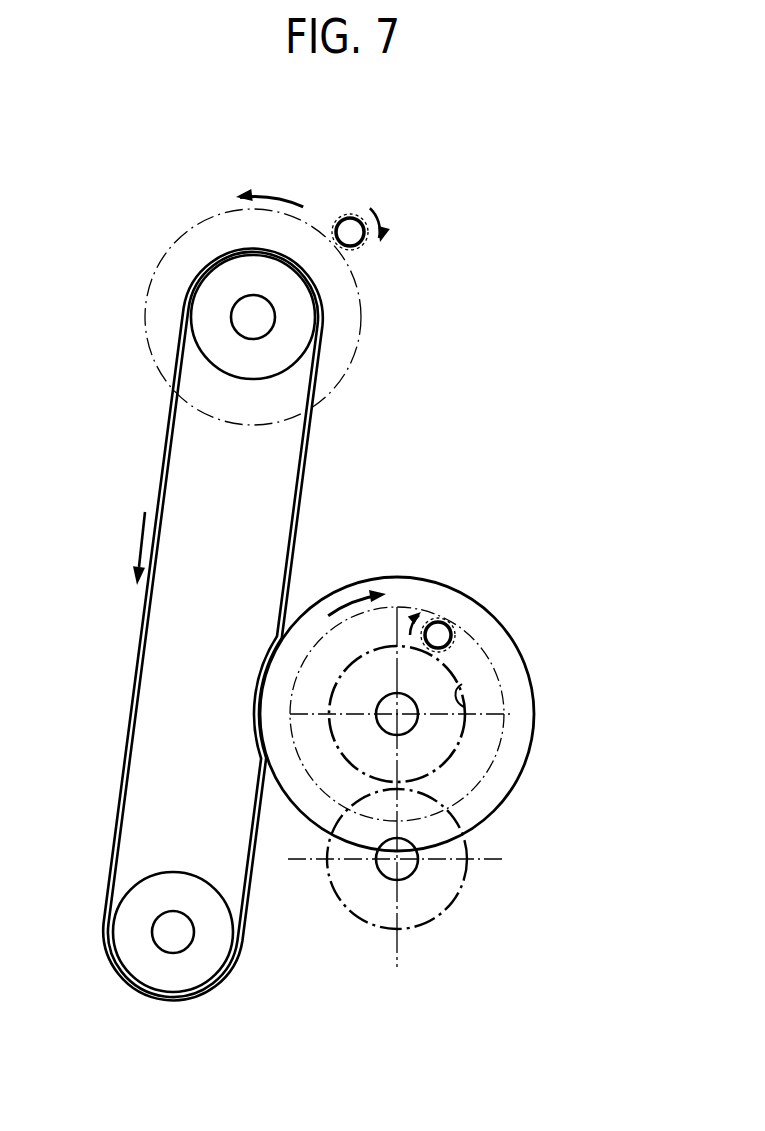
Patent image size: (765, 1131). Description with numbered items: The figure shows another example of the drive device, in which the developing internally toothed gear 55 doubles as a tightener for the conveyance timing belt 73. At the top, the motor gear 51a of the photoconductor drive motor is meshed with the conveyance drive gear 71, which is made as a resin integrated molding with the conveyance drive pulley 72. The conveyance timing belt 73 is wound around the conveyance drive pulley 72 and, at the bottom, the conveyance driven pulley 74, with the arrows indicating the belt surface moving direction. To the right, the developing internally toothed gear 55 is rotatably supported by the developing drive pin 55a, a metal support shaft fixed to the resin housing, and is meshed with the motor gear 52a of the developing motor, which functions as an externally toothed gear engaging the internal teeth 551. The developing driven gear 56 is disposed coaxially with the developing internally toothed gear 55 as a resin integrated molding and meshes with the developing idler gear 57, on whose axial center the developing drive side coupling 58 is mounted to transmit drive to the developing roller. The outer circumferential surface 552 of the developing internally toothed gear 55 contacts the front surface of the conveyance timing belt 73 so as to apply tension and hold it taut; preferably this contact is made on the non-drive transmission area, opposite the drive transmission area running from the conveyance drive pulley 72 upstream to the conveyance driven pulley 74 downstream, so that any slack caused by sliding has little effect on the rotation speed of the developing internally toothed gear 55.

The motor gear 51a is at (348, 218).
The motor gear 52a is at (452, 635).
The developing internally toothed gear 55 is at (443, 570).
The developing drive pin 55a is at (397, 693).
The internal teeth 551 is at (462, 684).
The outer circumferential surface 552 is at (538, 714).
The developing driven gear 56 is at (461, 755).
The developing idler gear 57 is at (423, 928).
The developing drive side coupling 58 is at (418, 863).
The conveyance drive gear 71 is at (358, 345).
The conveyance drive pulley 72 is at (208, 360).
The conveyance timing belt 73 is at (140, 657).
The conveyance driven pulley 74 is at (132, 887).